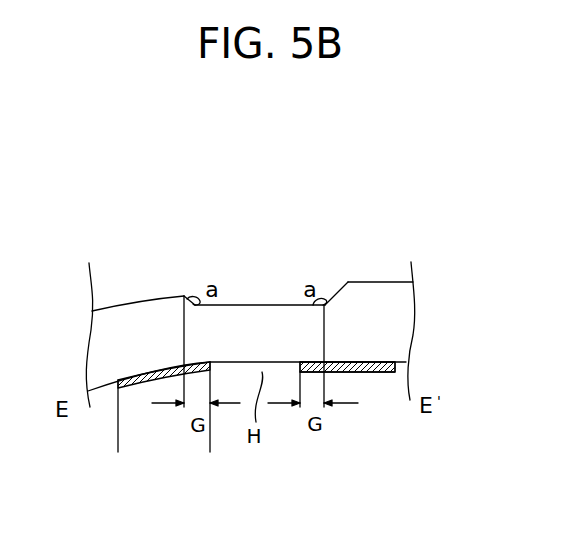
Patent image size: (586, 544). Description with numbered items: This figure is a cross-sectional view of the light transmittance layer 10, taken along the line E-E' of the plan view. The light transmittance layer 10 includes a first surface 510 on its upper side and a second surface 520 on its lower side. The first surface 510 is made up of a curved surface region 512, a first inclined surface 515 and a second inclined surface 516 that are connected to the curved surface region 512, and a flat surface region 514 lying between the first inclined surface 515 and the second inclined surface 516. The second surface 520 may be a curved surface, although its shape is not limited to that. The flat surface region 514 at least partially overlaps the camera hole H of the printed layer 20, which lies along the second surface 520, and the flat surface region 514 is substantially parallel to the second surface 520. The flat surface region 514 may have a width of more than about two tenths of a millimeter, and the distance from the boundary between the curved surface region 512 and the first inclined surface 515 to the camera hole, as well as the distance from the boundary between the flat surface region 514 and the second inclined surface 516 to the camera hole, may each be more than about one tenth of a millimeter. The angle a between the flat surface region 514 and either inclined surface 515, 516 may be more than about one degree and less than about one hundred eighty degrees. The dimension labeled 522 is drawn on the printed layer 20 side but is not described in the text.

The light transmittance layer 10 is at (400, 317).
The first surface 510 is at (130, 219).
The curved surface region 512 is at (149, 300).
The first inclined surface 515 is at (188, 296).
The flat surface region 514 is at (252, 304).
The second inclined surface 516 is at (338, 290).
The left electrode layer 522 is at (118, 447).
The second surface 520 is at (397, 373).
The printed layer 20 is at (362, 373).